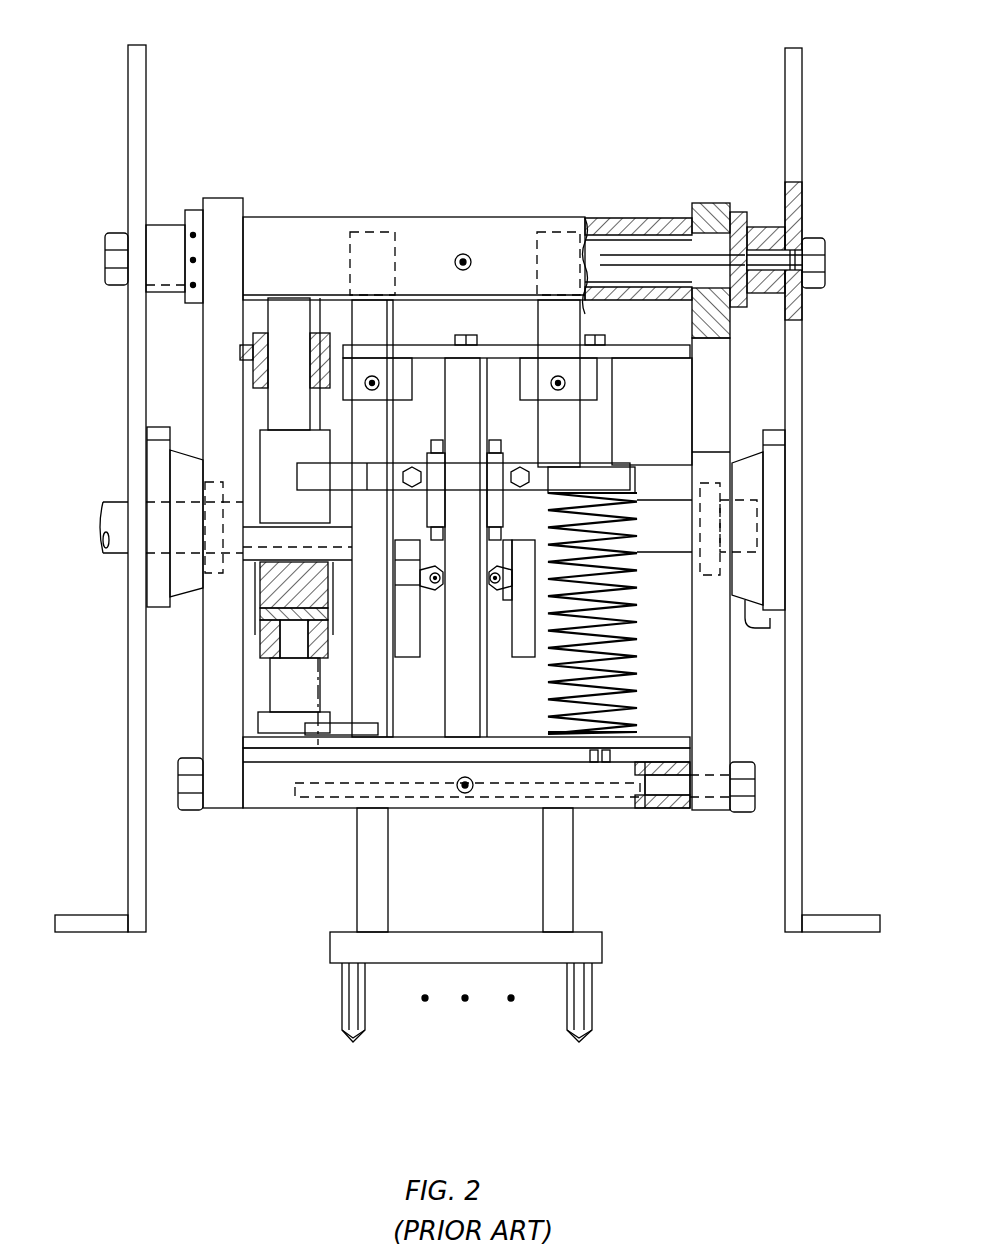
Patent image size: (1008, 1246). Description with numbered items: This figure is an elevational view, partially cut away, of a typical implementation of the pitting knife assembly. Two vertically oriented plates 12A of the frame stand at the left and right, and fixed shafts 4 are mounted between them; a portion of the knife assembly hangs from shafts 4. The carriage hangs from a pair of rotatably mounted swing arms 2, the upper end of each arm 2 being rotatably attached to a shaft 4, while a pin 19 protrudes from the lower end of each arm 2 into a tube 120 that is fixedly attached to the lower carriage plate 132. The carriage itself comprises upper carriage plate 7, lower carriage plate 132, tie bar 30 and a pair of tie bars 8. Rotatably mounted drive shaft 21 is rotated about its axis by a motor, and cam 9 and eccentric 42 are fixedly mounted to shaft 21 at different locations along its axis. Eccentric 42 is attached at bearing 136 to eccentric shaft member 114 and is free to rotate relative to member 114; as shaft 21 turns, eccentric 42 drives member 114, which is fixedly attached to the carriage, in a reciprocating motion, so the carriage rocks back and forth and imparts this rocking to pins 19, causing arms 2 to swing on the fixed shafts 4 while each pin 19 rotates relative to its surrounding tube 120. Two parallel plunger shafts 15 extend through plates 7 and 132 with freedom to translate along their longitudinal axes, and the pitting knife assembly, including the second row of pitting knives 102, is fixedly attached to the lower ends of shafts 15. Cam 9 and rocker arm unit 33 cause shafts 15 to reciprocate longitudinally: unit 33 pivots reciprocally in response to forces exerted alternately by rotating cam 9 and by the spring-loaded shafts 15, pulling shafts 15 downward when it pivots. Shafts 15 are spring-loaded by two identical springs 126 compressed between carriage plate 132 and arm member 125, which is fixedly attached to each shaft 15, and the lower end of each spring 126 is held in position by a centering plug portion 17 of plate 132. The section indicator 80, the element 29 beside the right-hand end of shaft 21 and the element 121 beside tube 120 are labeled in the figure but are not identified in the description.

The frame plate 12A is at (480, 483).
The section line 80 is at (244, 170).
The plunger shaft 15 is at (427, 582).
The second row of pitting knives 102 is at (514, 988).
The shaft 4 is at (657, 242).
The swing arm 2 is at (740, 247).
The upper carriage plate 7 is at (516, 335).
The eccentric shaft member 114 is at (194, 410).
The tie bar 8 is at (517, 411).
The tie bar 30 is at (442, 525).
The rocker arm unit 33 is at (463, 578).
The cam 9 is at (516, 628).
The drive shaft 21 is at (456, 518).
The bracket 29 is at (818, 613).
The eccentric 42 is at (197, 613).
The bearing 136 is at (188, 656).
The centering plug portion 17 is at (318, 756).
The arm member 125 is at (616, 457).
The spring 126 is at (719, 613).
The lower carriage plate 132 is at (566, 734).
The tube 120 is at (678, 830).
The washer 121 is at (621, 818).
The pin 19 is at (711, 818).